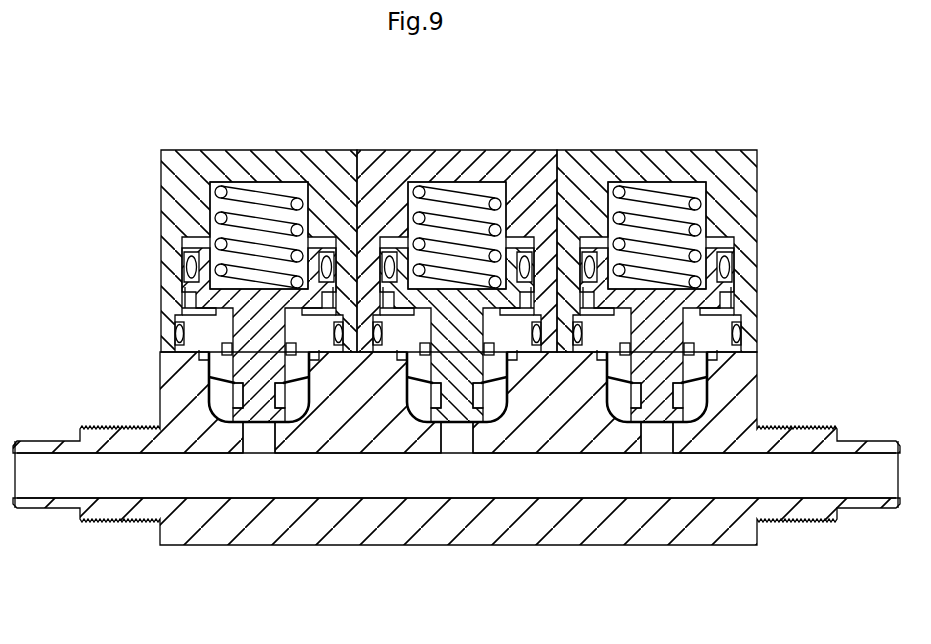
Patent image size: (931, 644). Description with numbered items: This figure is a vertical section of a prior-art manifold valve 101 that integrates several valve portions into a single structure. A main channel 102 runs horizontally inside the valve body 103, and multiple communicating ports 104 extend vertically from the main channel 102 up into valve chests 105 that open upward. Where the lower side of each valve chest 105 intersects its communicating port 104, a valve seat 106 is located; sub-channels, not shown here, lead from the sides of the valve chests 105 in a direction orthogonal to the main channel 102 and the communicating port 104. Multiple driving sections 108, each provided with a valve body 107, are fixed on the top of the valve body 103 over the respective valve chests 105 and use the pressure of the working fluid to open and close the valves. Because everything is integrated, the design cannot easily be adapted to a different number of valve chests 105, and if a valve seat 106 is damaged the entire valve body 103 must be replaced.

The manifold valve 101 is at (797, 292).
The main channel 102 is at (365, 480).
The valve body 103 is at (483, 522).
The communicating port 104 is at (258, 442).
The valve chest 105 is at (292, 407).
The valve seat 106 is at (233, 430).
The valve body 107 is at (240, 413).
The driving section 108 is at (232, 163).